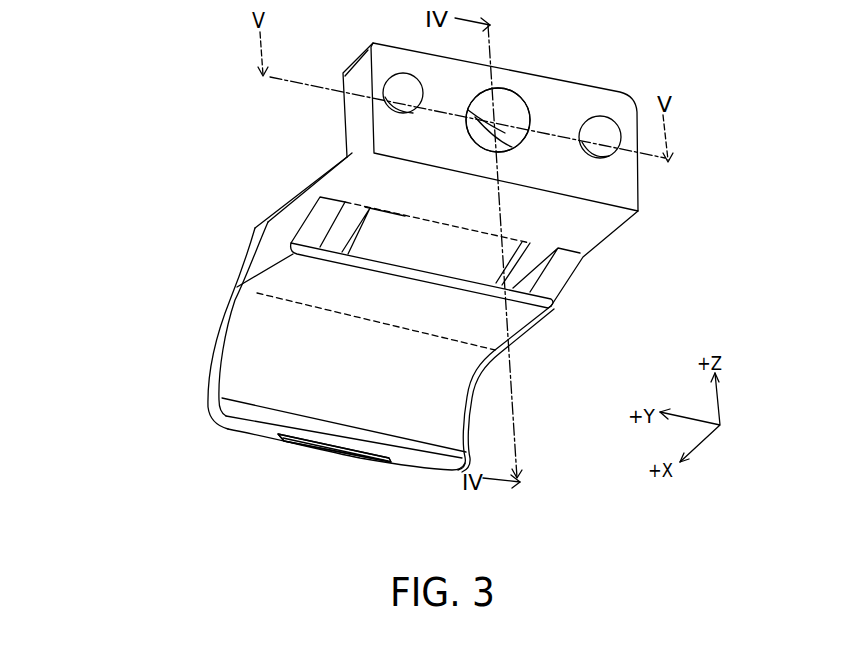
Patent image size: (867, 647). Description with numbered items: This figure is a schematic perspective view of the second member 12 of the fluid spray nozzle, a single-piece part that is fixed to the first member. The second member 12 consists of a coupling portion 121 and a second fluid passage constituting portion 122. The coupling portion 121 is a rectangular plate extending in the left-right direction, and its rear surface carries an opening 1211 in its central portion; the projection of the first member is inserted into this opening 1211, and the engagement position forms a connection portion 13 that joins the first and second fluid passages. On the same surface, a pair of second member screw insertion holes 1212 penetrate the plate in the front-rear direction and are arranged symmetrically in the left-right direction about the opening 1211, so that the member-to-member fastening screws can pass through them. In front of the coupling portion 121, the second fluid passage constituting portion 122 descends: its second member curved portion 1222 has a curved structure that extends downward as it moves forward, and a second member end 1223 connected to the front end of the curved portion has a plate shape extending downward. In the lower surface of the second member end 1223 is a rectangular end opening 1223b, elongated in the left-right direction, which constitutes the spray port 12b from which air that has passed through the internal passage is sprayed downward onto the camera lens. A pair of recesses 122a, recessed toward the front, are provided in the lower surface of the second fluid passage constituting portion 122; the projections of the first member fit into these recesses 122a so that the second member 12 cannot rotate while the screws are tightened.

The second member 12 is at (662, 60).
The coupling portion 121 is at (360, 120).
The second member screw insertion holes 1212 is at (407, 90).
The opening 1211 is at (517, 118).
The connection portion 13 is at (498, 120).
The second fluid passage constituting portion 122 is at (248, 222).
The recesses 122a is at (322, 252).
The second member curved portion 1222 is at (227, 313).
The second member end 1223 is at (212, 377).
The end opening 1223b is at (290, 445).
The spray port 12b is at (334, 448).